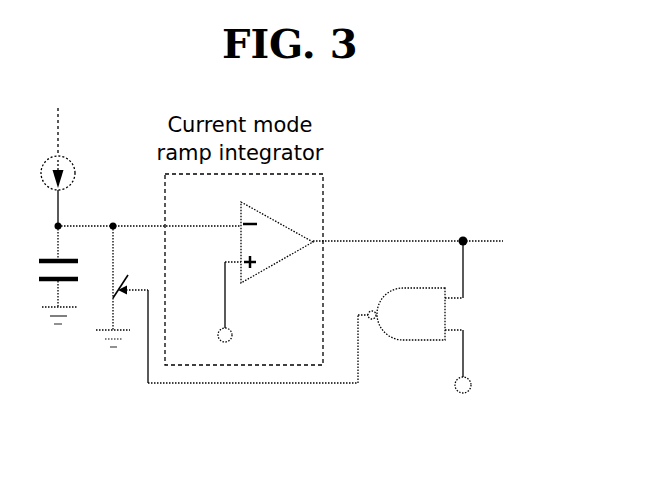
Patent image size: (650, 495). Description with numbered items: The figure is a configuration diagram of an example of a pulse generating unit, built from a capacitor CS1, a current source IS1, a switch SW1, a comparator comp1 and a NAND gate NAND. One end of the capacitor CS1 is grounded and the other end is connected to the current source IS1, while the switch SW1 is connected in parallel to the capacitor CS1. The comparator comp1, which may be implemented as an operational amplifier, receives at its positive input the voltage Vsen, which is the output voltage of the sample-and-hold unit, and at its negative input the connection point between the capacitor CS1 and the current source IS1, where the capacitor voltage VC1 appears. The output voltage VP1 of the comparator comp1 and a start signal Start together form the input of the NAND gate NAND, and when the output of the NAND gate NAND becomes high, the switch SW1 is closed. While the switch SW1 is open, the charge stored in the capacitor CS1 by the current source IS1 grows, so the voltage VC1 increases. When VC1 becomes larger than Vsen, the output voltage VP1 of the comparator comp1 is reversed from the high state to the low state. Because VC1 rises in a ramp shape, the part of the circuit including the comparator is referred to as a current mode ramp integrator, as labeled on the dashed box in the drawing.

The current source IS1 is at (76, 167).
The capacitor voltage VC1 is at (148, 215).
The capacitor CS1 is at (66, 276).
The switch SW1 is at (124, 288).
The comparator comp1 is at (277, 242).
The output voltage of the S/H unit Vsen is at (255, 305).
The output voltage of the comparator VP1 is at (408, 230).
The NAND gate NAND is at (415, 290).
The start signal Start is at (463, 376).